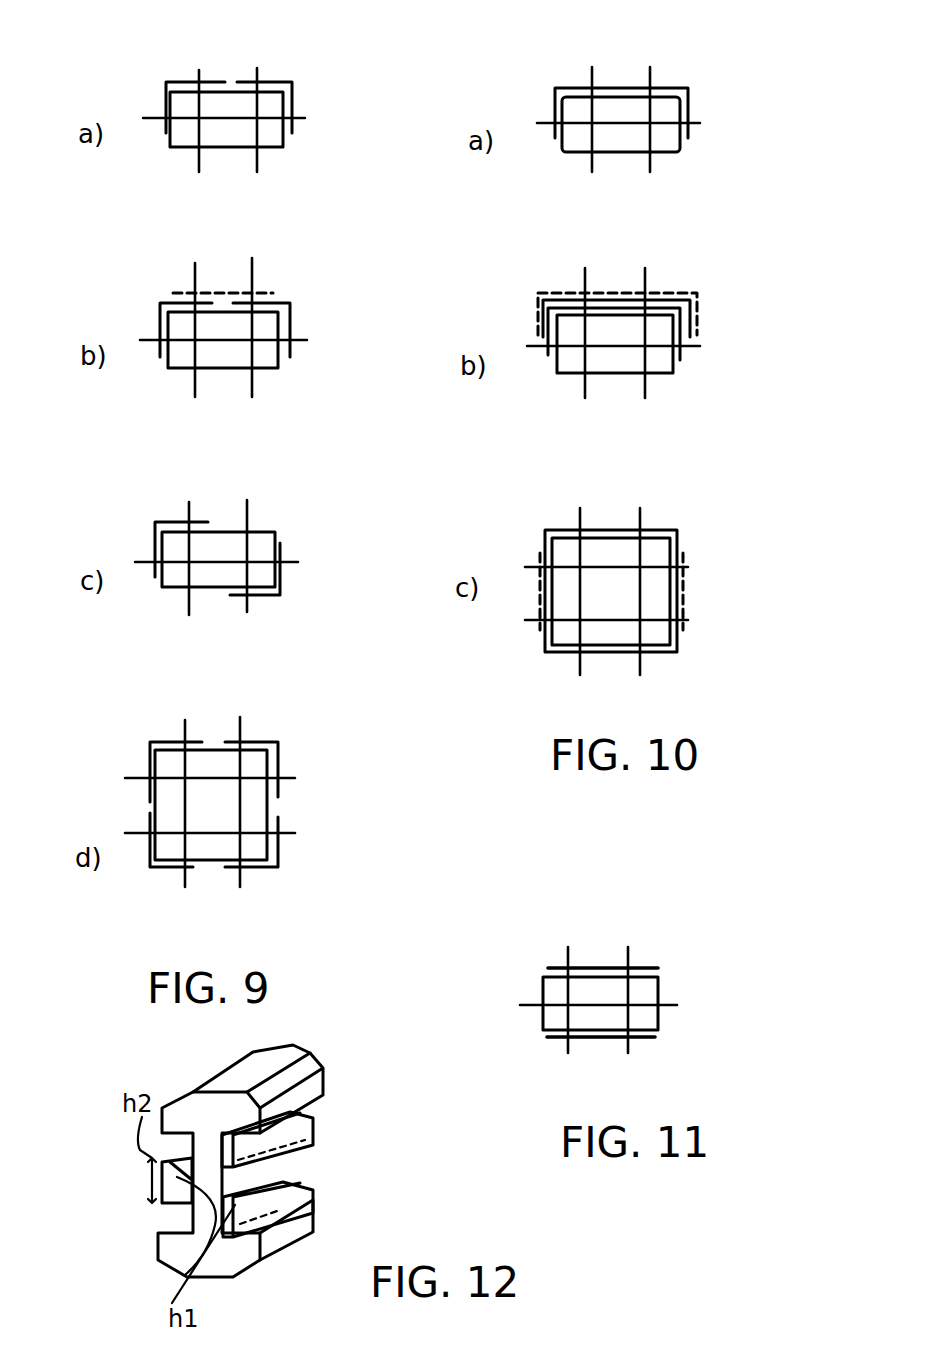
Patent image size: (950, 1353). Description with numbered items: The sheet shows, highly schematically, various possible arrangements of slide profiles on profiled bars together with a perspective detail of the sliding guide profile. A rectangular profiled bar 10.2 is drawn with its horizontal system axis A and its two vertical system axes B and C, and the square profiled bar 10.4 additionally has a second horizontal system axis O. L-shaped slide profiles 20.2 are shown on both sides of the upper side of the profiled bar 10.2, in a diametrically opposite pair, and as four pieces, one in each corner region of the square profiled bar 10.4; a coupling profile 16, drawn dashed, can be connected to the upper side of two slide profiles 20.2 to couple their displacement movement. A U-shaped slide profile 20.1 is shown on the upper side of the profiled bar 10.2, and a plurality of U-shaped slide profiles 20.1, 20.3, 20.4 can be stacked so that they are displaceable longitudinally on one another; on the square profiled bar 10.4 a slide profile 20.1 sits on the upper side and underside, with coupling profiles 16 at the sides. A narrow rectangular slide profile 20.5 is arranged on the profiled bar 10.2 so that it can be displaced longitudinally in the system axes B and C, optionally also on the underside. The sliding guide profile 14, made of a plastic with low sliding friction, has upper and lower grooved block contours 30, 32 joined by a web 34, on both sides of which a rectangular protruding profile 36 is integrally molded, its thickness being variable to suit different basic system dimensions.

In FIG. 9, the profiled bar 10.2 is at (271, 140).
In FIG. 10, the profiled bar 10.2 is at (668, 143).
In FIG. 11, the profiled bar 10.2 is at (648, 991).
In FIG. 9, the square profiled bar 10.4 is at (234, 808).
In FIG. 10, the square profiled bar 10.4 is at (606, 640).
In FIG. 9, the coupling profile 16 is at (222, 292).
In FIG. 10, the coupling profile 16 is at (683, 588).
In FIG. 10, the U-shaped slide profile 20.1 is at (618, 86).
In FIG. 9, the L-shaped slide profile 20.2 is at (165, 90).
In FIG. 10, the U-shaped slide profile 20.3 is at (693, 325).
In FIG. 10, the U-shaped slide profile 20.4 is at (698, 296).
In FIG. 11, the rectangular slide profile 20.5 is at (605, 965).
In FIG. 12, the sliding guide profile 14 is at (130, 1185).
In FIG. 12, the grooved block contour 30 is at (188, 1115).
In FIG. 12, the grooved block contour 32 is at (233, 1265).
In FIG. 12, the web 34 is at (273, 1128).
In FIG. 12, the protruding profile 36 is at (243, 1182).
In FIG. 9, the horizontal system axis A is at (305, 119).
In FIG. 10, the horizontal system axis A is at (698, 122).
In FIG. 11, the horizontal system axis A is at (668, 1007).
In FIG. 9, the vertical system axis B is at (257, 70).
In FIG. 10, the vertical system axis B is at (652, 72).
In FIG. 11, the vertical system axis B is at (633, 950).
In FIG. 9, the vertical system axis C is at (199, 70).
In FIG. 10, the vertical system axis C is at (592, 72).
In FIG. 11, the vertical system axis C is at (568, 959).
In FIG. 9, the axis O is at (289, 836).
In FIG. 10, the axis O is at (689, 624).